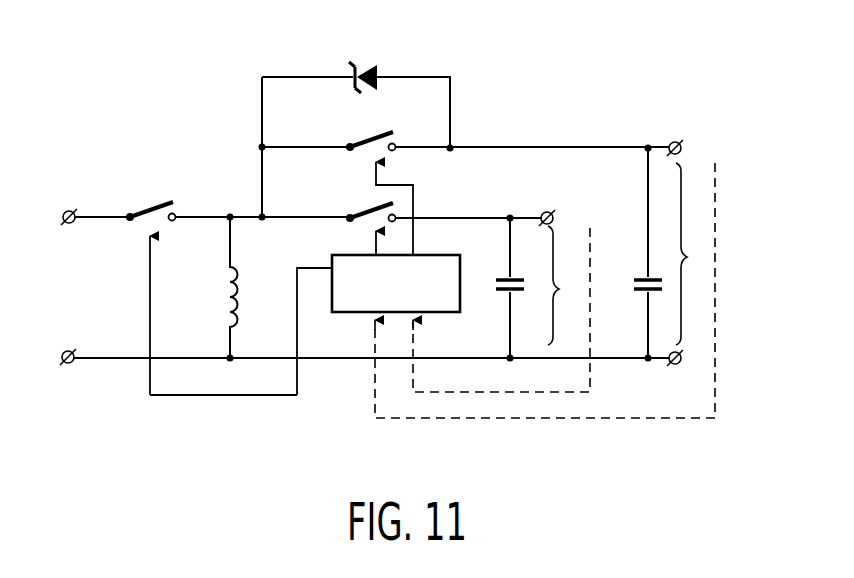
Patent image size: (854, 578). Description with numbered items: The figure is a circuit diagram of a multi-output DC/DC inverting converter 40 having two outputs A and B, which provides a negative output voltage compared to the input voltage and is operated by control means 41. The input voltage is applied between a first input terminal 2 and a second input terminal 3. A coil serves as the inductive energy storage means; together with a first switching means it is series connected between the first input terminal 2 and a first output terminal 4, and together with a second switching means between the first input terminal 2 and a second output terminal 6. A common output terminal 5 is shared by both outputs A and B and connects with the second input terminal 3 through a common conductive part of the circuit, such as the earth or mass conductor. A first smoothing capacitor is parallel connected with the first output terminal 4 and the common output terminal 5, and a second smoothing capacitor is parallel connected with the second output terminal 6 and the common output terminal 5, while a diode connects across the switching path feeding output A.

The first input terminal 2 is at (68, 207).
The second input terminal 3 is at (70, 369).
The first output terminal 4 is at (675, 135).
The common output terminal 5 is at (677, 370).
The second output terminal 6 is at (546, 206).
The multi-output DC/DC inverting converter 40 is at (200, 111).
The control means 41 is at (345, 314).